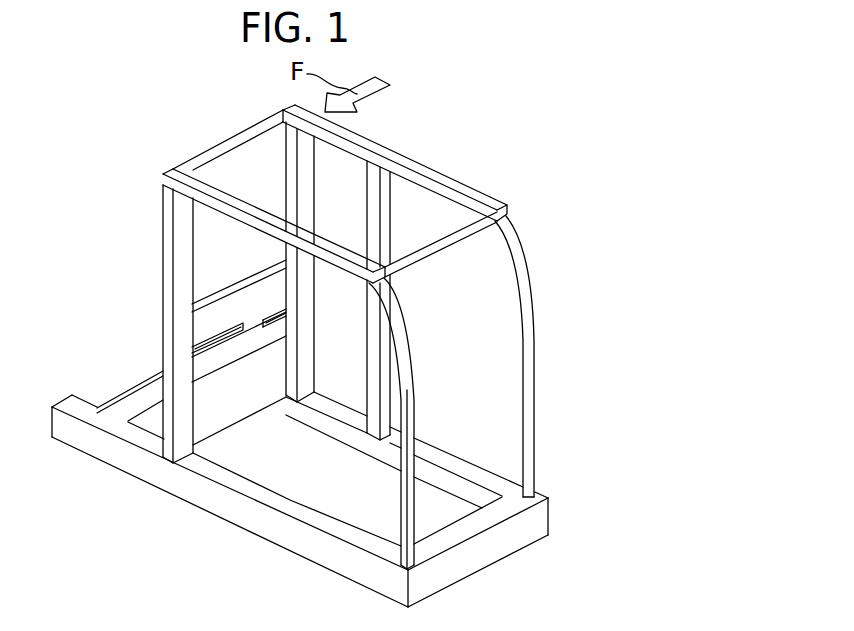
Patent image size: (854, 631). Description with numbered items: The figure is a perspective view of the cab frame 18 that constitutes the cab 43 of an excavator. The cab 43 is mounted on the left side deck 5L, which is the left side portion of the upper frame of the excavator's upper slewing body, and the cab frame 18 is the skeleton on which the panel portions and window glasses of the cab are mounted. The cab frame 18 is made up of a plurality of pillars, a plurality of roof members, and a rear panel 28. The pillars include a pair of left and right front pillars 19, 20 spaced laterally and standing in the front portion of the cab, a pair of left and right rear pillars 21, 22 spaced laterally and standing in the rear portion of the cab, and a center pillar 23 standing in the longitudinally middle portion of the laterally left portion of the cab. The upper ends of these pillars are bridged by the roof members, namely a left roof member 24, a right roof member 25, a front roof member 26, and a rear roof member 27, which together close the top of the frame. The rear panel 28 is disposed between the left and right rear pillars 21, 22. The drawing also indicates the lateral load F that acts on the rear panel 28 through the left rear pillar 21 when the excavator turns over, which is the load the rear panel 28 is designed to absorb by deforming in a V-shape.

The left side deck 5L is at (229, 525).
The cab frame 18 is at (460, 170).
The left front pillar 19 is at (521, 355).
The right front pillar 20 is at (399, 513).
The left rear pillar 21 is at (315, 295).
The right rear pillar 22 is at (162, 353).
The center pillar 23 is at (366, 350).
The left roof member 24 is at (391, 158).
The right roof member 25 is at (271, 218).
The front roof member 26 is at (441, 232).
The rear roof member 27 is at (232, 143).
The rear panel 28 is at (232, 280).
The cab 43 is at (575, 191).